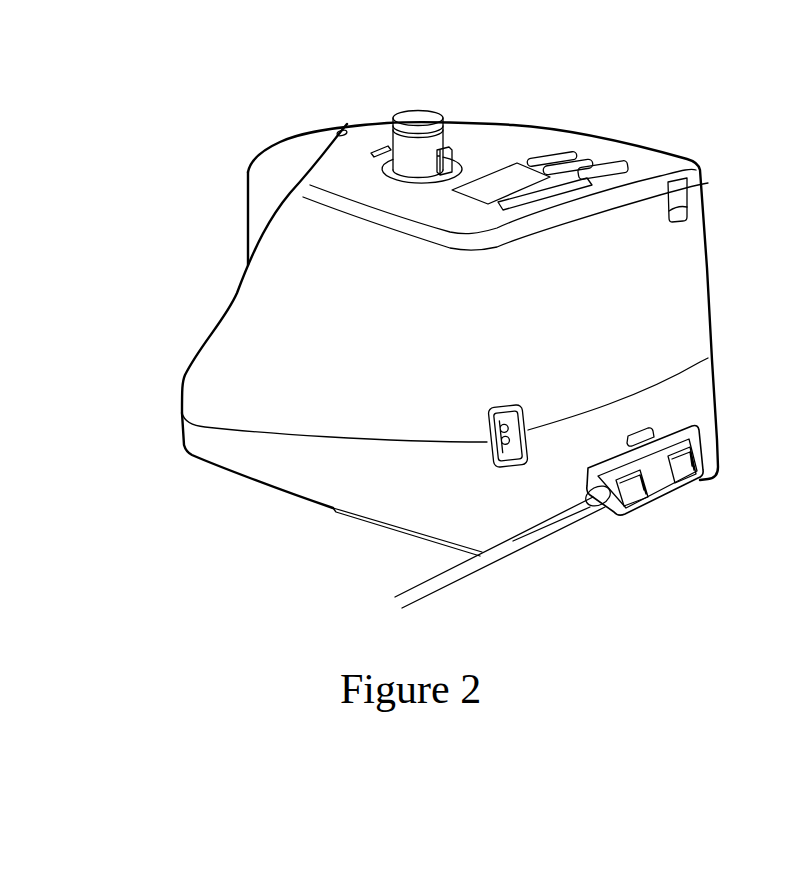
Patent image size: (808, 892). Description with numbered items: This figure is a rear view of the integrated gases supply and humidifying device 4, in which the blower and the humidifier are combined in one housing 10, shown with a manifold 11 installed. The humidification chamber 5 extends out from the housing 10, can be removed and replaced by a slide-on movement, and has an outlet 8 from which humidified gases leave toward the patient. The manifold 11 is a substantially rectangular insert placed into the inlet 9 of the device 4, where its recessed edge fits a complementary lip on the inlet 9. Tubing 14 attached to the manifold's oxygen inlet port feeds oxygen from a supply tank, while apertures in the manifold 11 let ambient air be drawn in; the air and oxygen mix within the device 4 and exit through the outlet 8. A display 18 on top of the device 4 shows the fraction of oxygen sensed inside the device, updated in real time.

The integrated gases supply and humidifying device 4 is at (645, 103).
The humidification chamber 5 is at (295, 163).
The outlet 8 is at (438, 140).
The inlet 9 is at (655, 432).
The housing 10 is at (262, 377).
The manifold 11 is at (658, 480).
The tubing 14 is at (427, 587).
The display 18 is at (541, 147).